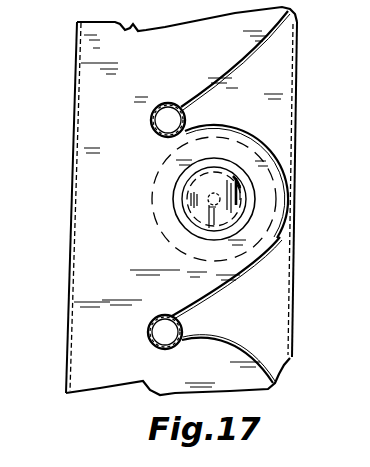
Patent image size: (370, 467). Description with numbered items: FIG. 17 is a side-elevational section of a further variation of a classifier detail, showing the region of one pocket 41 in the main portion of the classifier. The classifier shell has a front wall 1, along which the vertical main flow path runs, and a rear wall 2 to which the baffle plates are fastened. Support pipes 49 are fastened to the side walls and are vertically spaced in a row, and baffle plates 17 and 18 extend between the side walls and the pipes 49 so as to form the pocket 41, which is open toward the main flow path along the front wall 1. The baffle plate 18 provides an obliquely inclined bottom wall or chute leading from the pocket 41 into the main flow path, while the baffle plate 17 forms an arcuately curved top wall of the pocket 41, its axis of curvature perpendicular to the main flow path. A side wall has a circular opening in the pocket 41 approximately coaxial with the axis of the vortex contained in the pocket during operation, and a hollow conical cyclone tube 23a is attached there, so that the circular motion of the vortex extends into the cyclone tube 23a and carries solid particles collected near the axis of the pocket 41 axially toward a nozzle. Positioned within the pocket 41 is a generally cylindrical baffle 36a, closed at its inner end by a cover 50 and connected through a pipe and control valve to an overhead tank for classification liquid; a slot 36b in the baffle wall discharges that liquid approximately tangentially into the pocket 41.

The front wall 1 is at (70, 343).
The rear wall 2 is at (297, 42).
The baffle plate 17 is at (257, 138).
The baffle plate 18 is at (240, 64).
The cyclone tube 23a is at (250, 208).
The baffle 36a is at (190, 223).
The slot 36b is at (240, 183).
The pocket 41 is at (262, 257).
The support pipe 49 is at (151, 118).
The cover 50 is at (197, 193).